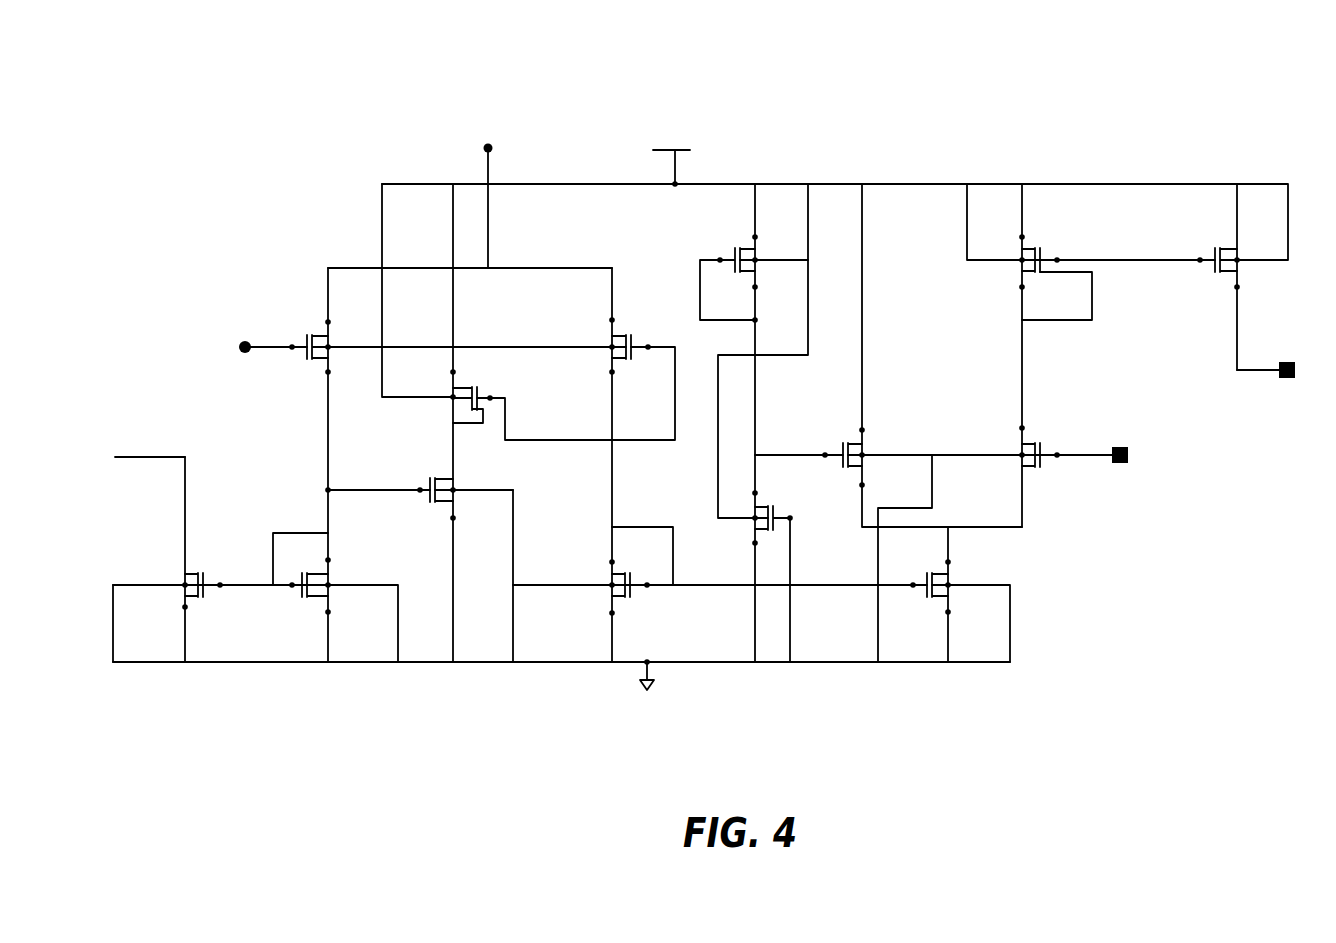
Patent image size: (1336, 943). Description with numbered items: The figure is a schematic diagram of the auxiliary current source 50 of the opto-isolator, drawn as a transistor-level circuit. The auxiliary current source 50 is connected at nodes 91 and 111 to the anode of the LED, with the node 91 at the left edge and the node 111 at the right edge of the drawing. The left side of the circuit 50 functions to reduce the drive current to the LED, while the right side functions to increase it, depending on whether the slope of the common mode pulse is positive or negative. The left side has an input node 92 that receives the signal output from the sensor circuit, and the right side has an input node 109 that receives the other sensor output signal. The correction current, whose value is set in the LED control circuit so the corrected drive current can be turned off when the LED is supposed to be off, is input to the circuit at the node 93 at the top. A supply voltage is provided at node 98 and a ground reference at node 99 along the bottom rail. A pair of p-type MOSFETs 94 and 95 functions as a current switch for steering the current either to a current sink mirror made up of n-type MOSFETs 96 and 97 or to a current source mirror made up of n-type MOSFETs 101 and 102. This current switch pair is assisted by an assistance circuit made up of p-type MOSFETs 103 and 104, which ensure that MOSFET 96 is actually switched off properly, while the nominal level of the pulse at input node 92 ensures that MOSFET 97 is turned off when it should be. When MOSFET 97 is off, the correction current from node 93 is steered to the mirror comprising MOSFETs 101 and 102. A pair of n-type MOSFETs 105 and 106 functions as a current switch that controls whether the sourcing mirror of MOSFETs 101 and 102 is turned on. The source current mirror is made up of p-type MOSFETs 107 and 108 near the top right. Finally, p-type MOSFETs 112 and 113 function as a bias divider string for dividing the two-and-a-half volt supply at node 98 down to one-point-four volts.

The auxiliary current source 50 is at (262, 92).
The node 91 is at (152, 458).
The input node 92 is at (244, 342).
The node 93 is at (496, 169).
The p-type MOSFET 94 is at (302, 355).
The p-type MOSFET 95 is at (634, 361).
The n-type MOSFET 96 is at (196, 597).
The n-type MOSFET 97 is at (300, 597).
The node 98 is at (690, 150).
The node 99 is at (656, 685).
The n-type MOSFET 101 is at (633, 575).
The n-type MOSFET 102 is at (925, 597).
The p-type MOSFET 103 is at (421, 496).
The p-type MOSFET 104 is at (473, 385).
The n-type MOSFET 105 is at (839, 470).
The n-type MOSFET 106 is at (1040, 468).
The p-type MOSFET 107 is at (1044, 252).
The p-type MOSFET 108 is at (1213, 272).
The input node 109 is at (1120, 447).
The node 111 is at (1286, 380).
The p-type MOSFET 112 is at (722, 258).
The p-type MOSFET 113 is at (777, 512).